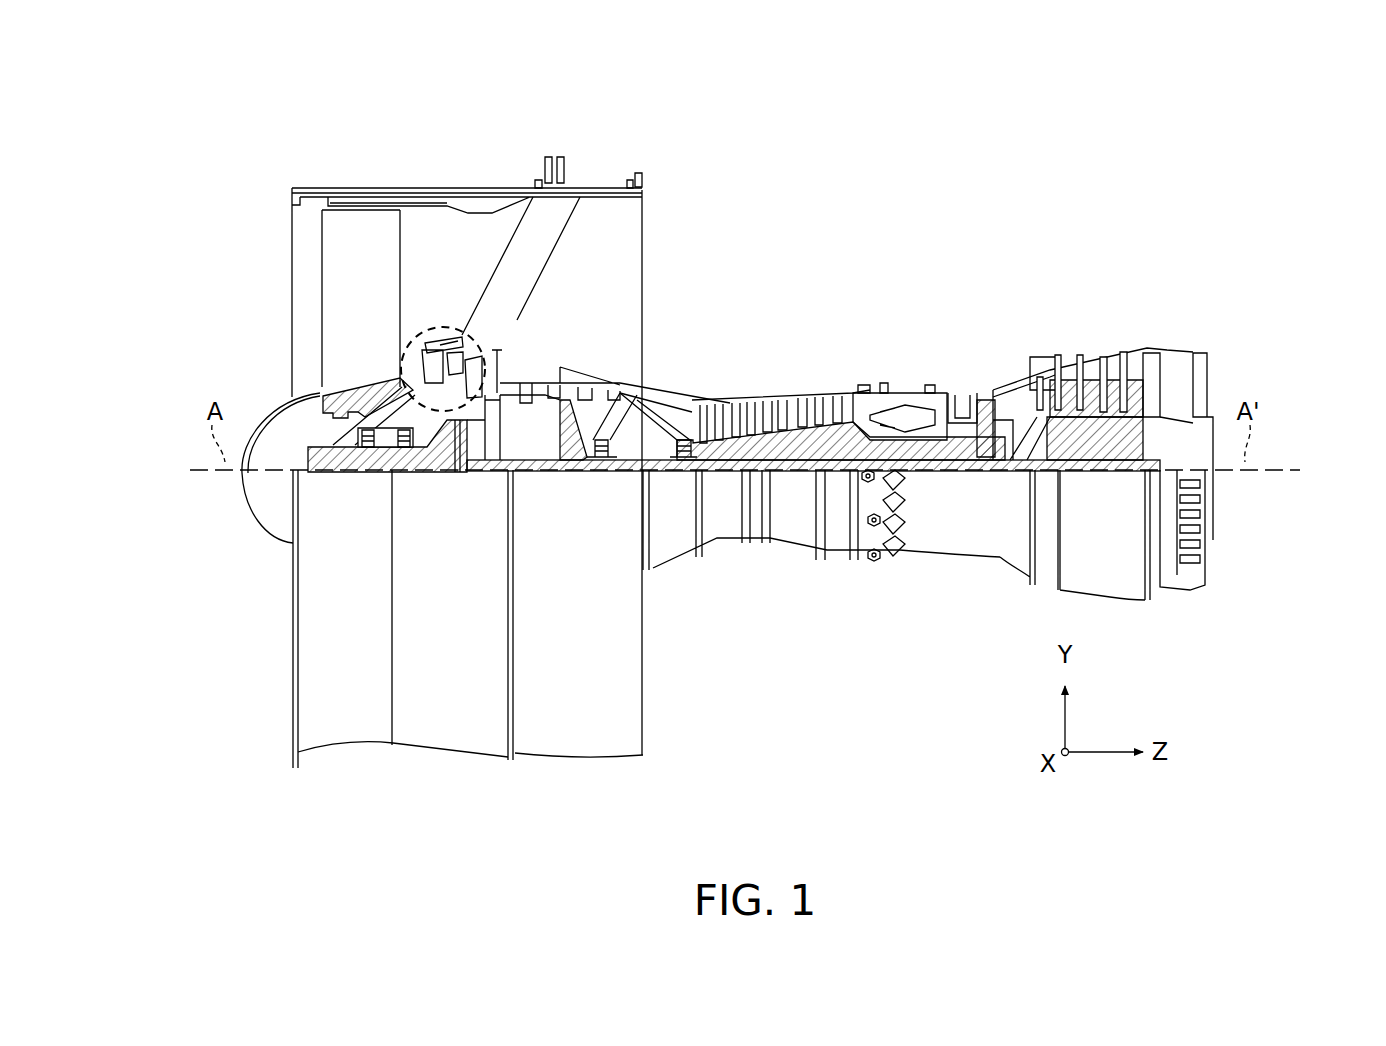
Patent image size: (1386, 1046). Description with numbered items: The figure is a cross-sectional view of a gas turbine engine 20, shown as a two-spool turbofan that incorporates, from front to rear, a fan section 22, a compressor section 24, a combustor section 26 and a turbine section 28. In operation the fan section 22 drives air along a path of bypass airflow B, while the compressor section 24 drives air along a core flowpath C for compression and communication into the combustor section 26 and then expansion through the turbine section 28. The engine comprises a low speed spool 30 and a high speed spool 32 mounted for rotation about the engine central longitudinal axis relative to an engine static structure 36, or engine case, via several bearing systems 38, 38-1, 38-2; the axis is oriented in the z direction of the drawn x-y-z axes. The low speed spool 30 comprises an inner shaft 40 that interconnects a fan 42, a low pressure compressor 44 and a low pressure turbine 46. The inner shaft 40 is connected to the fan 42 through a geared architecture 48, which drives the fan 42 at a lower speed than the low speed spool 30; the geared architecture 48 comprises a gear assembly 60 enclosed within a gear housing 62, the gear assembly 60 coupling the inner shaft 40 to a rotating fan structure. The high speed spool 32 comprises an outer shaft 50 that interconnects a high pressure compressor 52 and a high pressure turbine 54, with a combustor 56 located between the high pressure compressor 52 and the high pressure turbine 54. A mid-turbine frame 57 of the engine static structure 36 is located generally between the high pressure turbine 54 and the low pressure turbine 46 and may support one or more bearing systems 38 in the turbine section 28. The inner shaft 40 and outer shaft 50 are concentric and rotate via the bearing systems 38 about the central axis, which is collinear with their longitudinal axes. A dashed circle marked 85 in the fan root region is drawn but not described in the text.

The gas turbine engine 20 is at (947, 185).
The fan section 22 is at (490, 175).
The compressor section 24 is at (515, 290).
The combustor section 26 is at (860, 290).
The turbine section 28 is at (1150, 290).
The low speed spool 30 is at (800, 483).
The high speed spool 32 is at (843, 430).
The engine static structure 36 is at (835, 535).
The bearing system 38 is at (1012, 465).
The bearing system 38-1 is at (393, 462).
The bearing system 38-2 is at (603, 462).
The inner shaft 40 is at (662, 470).
The fan 42 is at (451, 292).
The low pressure compressor 44 is at (583, 372).
The low pressure turbine 46 is at (1093, 360).
The geared architecture 48 is at (470, 500).
The outer shaft 50 is at (907, 465).
The high pressure compressor 52 is at (793, 407).
The high pressure turbine 54 is at (967, 393).
The combustor 56 is at (910, 407).
The mid-turbine frame 57 is at (1010, 383).
The gear assembly 60 is at (487, 438).
The gear housing 62 is at (487, 416).
The blade platform seal 85 is at (415, 338).
The bypass airflow B is at (470, 262).
The core flowpath C is at (383, 362).